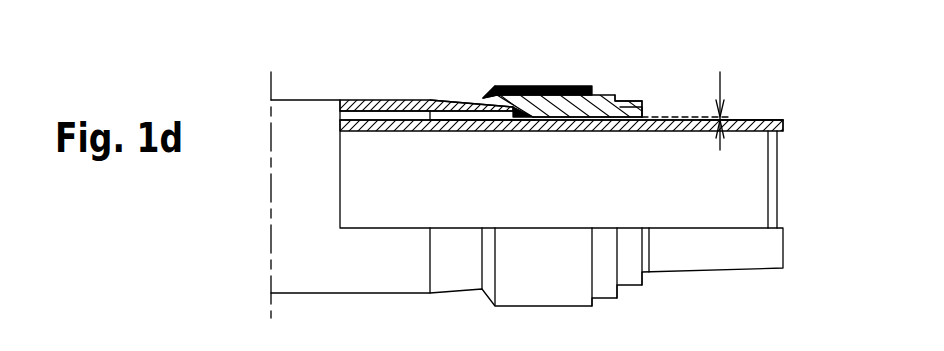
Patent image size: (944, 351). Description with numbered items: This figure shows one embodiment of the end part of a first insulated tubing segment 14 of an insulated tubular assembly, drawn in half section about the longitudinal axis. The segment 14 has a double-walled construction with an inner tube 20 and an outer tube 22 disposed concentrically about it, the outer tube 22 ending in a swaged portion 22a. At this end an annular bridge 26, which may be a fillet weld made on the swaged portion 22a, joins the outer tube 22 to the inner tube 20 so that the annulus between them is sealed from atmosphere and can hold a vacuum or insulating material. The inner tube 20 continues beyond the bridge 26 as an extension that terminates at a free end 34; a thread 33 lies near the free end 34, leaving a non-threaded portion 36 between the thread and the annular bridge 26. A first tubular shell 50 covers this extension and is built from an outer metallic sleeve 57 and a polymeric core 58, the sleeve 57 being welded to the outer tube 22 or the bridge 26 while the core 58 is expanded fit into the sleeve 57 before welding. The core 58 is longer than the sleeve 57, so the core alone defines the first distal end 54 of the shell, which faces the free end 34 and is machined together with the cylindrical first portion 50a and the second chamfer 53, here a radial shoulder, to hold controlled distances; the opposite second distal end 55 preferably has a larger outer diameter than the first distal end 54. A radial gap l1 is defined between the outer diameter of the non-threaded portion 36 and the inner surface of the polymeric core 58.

The first insulated tubing segment 14 is at (338, 67).
The inner tube 20 is at (383, 123).
The outer tube 22 is at (369, 102).
The swaged portion 22a is at (462, 106).
The annular bridge 26 is at (527, 121).
The box 33 is at (751, 122).
The free end 34 is at (783, 128).
The non-threaded portion 36 is at (632, 124).
The first tubular shell 50 is at (642, 40).
The first portion 50a is at (640, 125).
The second chamfer 53 is at (618, 100).
The first distal end 54 is at (641, 107).
The second distal end 55 is at (487, 95).
The outer metallic sleeve 57 is at (541, 86).
The polymeric core 58 is at (602, 96).
The radial gap l1 is at (722, 78).